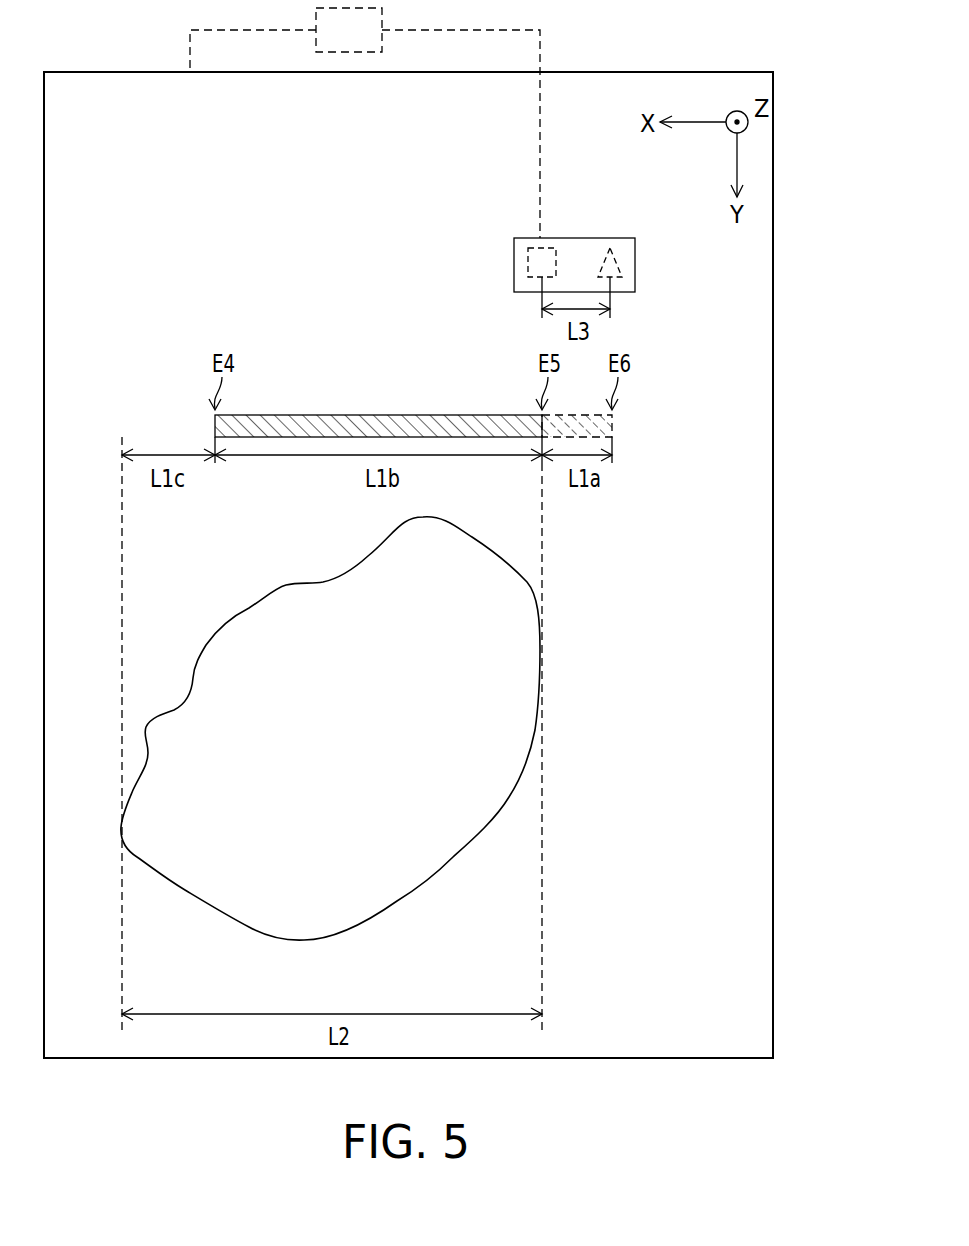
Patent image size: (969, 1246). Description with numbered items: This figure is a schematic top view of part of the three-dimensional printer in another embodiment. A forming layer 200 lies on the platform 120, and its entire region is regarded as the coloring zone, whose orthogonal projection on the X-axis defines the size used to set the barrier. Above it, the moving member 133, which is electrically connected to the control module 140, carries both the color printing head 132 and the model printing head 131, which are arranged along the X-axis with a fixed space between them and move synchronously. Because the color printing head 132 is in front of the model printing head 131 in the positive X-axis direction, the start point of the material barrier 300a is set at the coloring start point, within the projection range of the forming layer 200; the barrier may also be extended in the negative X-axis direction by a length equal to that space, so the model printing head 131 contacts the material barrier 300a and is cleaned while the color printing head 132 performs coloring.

The platform 120 is at (100, 71).
The control module 140 is at (371, 44).
The moving member 133 is at (575, 238).
The color printing head 132 is at (528, 264).
The model printing head 131 is at (620, 268).
The material barrier 300a is at (308, 306).
The forming layer 200 is at (561, 675).